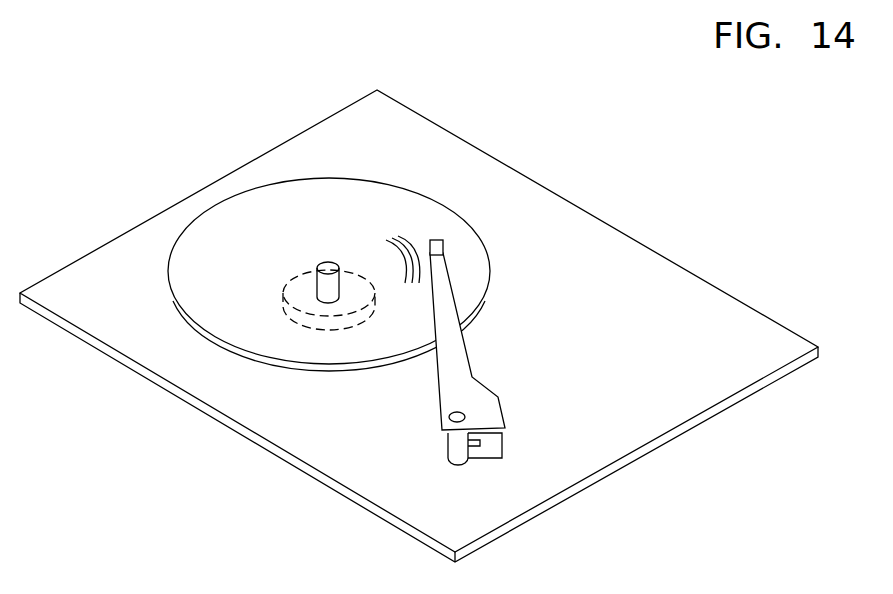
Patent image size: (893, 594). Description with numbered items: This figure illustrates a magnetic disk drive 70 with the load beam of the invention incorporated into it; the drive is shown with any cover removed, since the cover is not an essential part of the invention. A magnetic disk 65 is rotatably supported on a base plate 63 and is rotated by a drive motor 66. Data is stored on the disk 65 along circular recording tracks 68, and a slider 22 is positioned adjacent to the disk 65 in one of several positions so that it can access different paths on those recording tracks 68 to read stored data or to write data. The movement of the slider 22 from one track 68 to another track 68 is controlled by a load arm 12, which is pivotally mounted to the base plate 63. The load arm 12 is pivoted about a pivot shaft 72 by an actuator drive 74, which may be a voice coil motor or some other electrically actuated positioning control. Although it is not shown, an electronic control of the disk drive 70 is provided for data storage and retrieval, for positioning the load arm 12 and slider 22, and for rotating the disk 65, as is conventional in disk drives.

The load arm 12 is at (457, 378).
The slider 22 is at (443, 243).
The base plate 63 is at (655, 308).
The magnetic disk 65 is at (250, 338).
The drive motor 66 is at (295, 282).
The circular recording tracks 68 is at (406, 236).
The disk drive 70 is at (552, 157).
The pivot shaft 72 is at (450, 448).
The actuator drive 74 is at (490, 452).